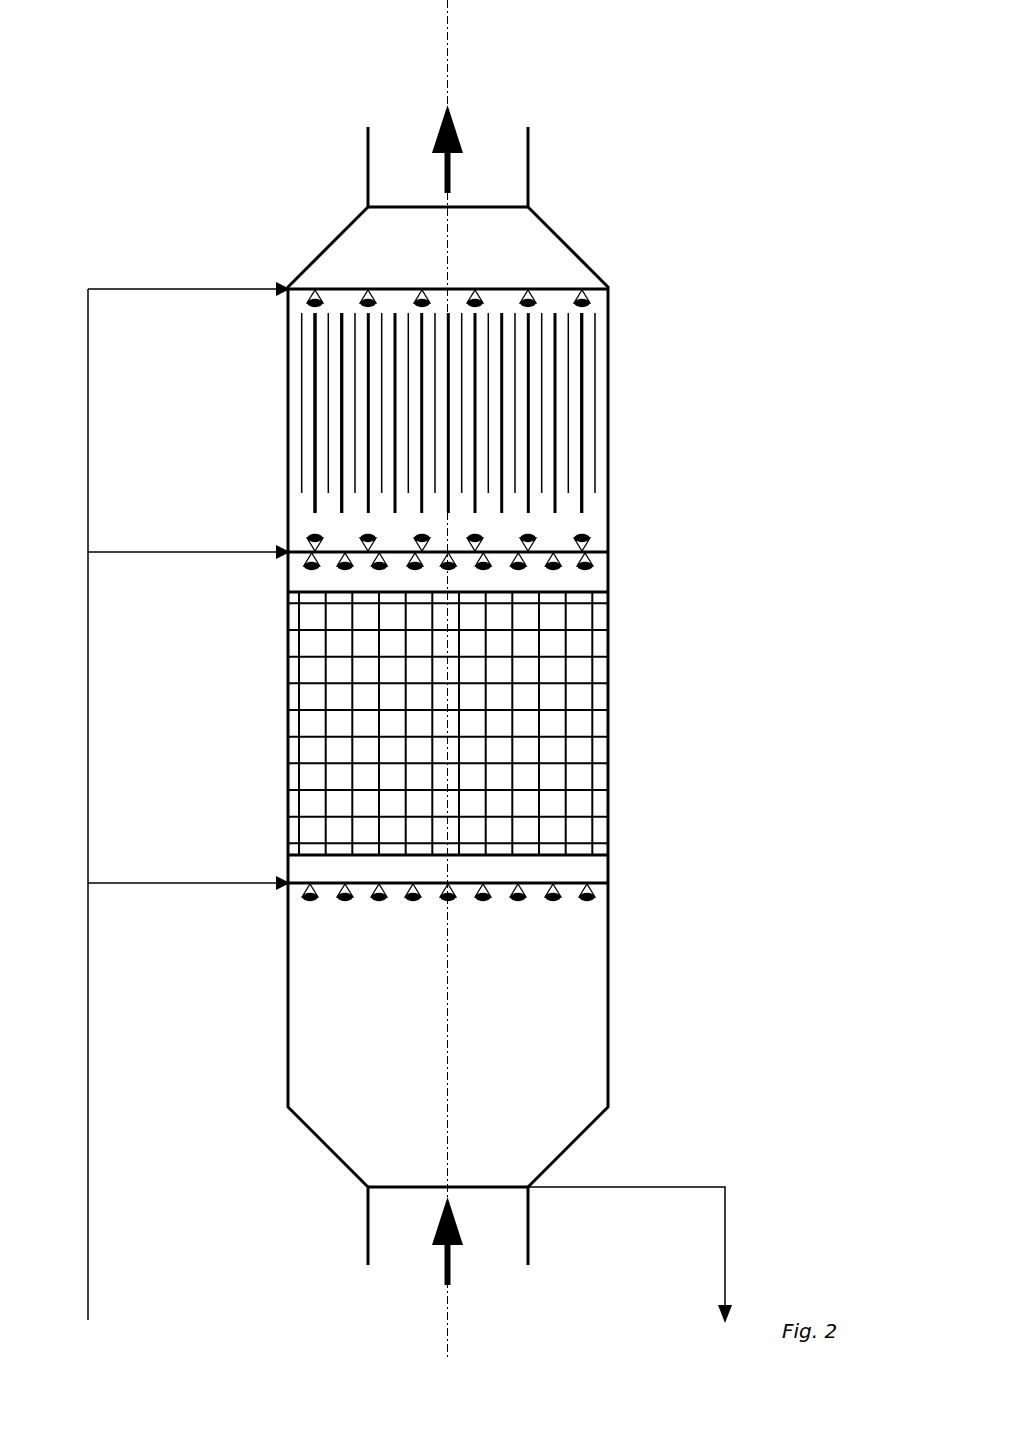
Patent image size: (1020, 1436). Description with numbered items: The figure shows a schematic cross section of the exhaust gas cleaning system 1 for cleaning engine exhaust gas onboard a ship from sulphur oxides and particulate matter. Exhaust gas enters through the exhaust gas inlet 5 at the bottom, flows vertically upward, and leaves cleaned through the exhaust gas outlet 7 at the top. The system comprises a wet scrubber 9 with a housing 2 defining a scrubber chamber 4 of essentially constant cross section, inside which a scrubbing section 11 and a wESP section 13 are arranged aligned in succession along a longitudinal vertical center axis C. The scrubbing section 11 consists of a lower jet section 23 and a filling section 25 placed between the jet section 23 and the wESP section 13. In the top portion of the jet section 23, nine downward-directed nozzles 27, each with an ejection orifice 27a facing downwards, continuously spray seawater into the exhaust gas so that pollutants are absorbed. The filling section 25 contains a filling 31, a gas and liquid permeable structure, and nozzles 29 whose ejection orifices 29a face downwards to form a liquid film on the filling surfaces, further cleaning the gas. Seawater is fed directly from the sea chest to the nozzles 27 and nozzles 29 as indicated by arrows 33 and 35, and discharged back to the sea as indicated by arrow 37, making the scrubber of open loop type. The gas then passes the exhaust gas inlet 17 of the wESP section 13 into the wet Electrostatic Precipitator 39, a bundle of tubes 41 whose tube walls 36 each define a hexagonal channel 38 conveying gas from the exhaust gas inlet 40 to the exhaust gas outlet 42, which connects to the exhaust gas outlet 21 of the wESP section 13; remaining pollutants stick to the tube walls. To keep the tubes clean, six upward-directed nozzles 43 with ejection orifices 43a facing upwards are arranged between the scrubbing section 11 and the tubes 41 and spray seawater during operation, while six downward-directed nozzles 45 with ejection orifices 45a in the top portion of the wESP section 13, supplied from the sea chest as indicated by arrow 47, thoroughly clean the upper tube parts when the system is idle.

The exhaust gas cleaning system 1 is at (452, 687).
The housing 2 is at (605, 604).
The scrubber chamber 4 is at (448, 1050).
The exhaust gas inlet 5 is at (405, 1242).
The exhaust gas outlet 7 is at (405, 147).
The wet scrubber 9 is at (477, 357).
The scrubbing section 11 is at (508, 920).
The wESP section 13 is at (477, 347).
The exhaust gas inlet 17 is at (466, 723).
The exhaust gas outlet 21 is at (491, 236).
The jet section 23 is at (540, 1000).
The filling section 25 is at (545, 750).
The nozzles 27 is at (486, 945).
The ejection orifice 27a is at (590, 926).
The nozzles 29 is at (384, 612).
The ejection orifice 29a is at (312, 565).
The filling 31 is at (320, 725).
The arrow 33 is at (178, 885).
The arrow 35 is at (168, 552).
The tube wall 36 is at (585, 353).
The arrow 37 is at (727, 1245).
The channel 38 is at (320, 345).
The wet Electrostatic Precipitator 39 is at (585, 455).
The exhaust gas inlet 40 is at (592, 513).
The tubes 41 is at (315, 400).
The exhaust gas outlet 42 is at (350, 305).
The nozzles 43 is at (394, 490).
The ejection orifice 43a is at (318, 537).
The nozzles 45 is at (515, 236).
The ejection orifice 45a is at (545, 300).
The arrow 47 is at (165, 289).
The longitudinal vertical center axis C is at (447, 65).